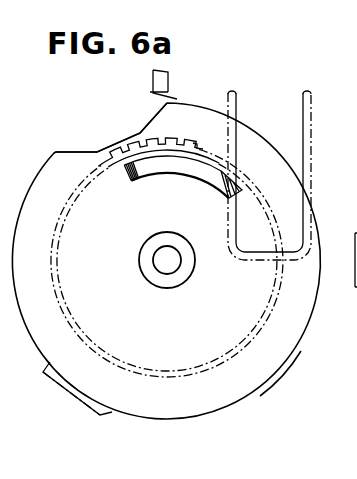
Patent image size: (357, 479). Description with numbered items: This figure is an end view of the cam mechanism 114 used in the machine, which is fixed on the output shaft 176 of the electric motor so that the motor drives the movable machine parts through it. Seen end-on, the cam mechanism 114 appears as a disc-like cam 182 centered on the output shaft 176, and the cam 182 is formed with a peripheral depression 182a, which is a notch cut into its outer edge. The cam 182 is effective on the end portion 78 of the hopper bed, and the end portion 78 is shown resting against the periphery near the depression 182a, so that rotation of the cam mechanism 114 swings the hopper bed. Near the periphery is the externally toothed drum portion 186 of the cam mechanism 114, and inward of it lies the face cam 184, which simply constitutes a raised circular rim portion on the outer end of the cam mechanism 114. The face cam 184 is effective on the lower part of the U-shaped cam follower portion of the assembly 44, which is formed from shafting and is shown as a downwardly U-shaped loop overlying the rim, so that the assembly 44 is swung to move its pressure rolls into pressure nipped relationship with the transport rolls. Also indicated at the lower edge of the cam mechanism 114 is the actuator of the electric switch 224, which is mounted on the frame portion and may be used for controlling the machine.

The assembly 44 is at (307, 95).
The end portion 78 is at (168, 80).
The cam mechanism 114 is at (262, 385).
The output shaft 176 is at (166, 264).
The cam 182 is at (200, 407).
The peripheral depression 182a is at (124, 139).
The face cam 184 is at (191, 168).
The externally toothed drum portion 186 is at (194, 143).
The electric switch 224 is at (80, 400).